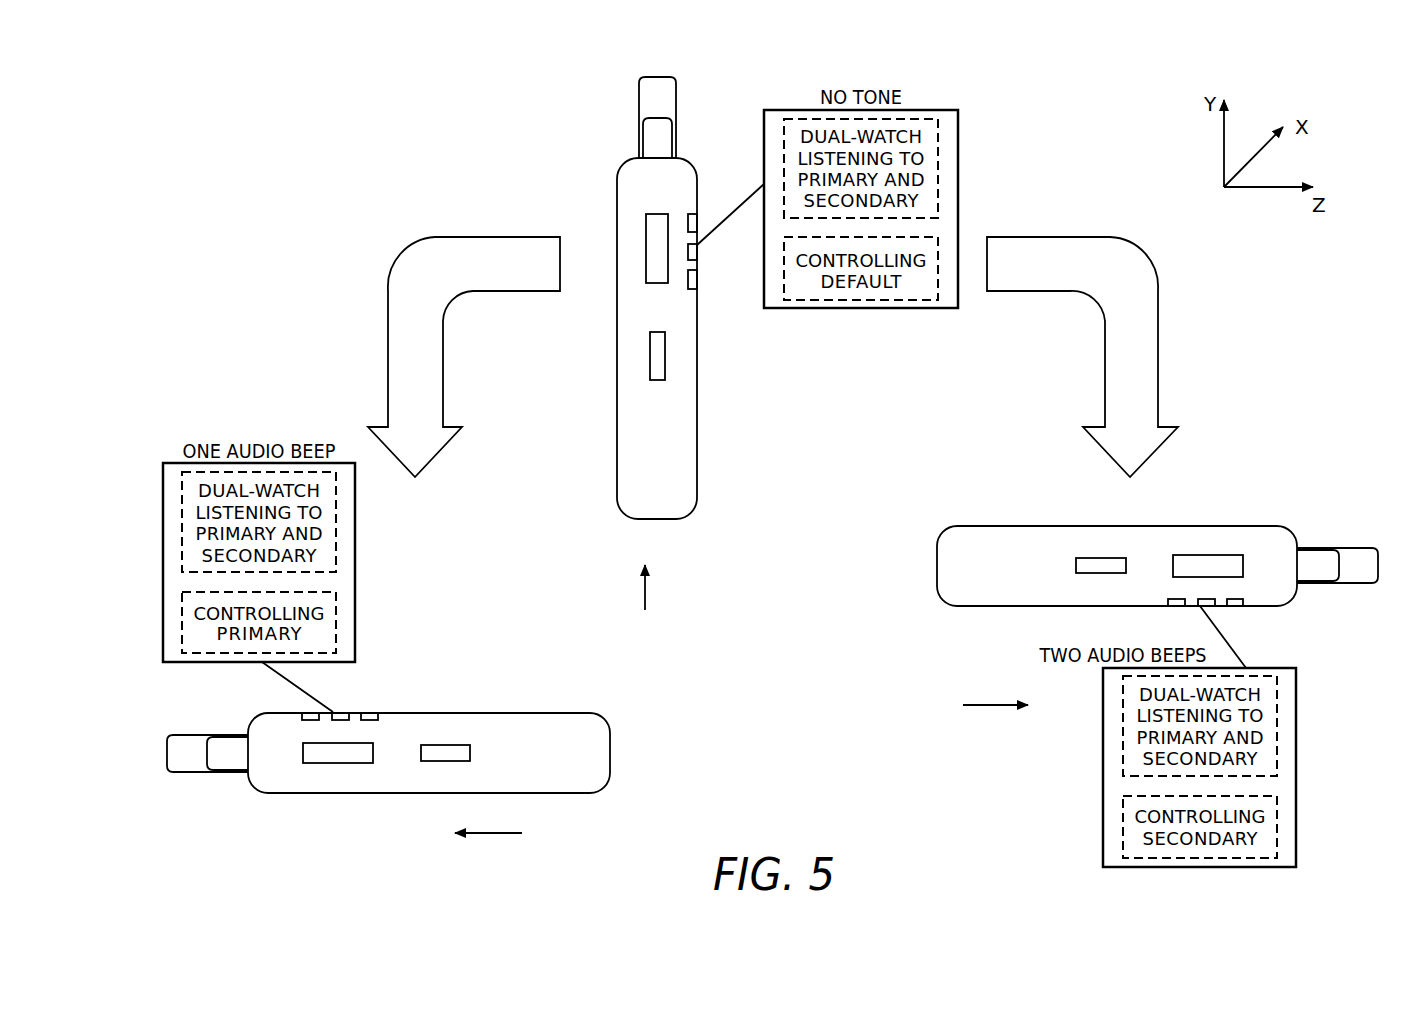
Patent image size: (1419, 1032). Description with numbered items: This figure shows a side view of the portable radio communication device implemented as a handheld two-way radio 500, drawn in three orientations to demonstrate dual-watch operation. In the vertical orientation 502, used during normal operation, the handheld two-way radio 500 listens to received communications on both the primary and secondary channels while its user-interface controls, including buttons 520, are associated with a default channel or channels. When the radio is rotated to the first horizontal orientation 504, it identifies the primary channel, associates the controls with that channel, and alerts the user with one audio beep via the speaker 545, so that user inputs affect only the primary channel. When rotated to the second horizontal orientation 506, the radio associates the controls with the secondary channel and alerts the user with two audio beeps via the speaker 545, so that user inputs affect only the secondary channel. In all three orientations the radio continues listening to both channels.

The handheld two-way radio 500 is at (617, 453).
The buttons 520 is at (697, 252).
The speaker 545 is at (650, 352).
The vertical orientation 502 is at (690, 600).
The first horizontal orientation 504 is at (520, 828).
The second horizontal orientation 506 is at (1006, 699).